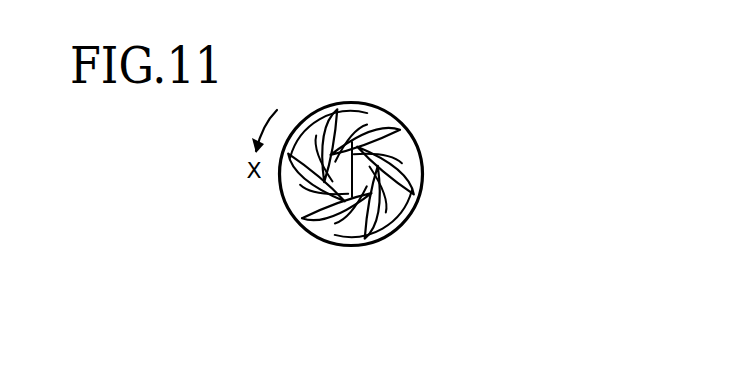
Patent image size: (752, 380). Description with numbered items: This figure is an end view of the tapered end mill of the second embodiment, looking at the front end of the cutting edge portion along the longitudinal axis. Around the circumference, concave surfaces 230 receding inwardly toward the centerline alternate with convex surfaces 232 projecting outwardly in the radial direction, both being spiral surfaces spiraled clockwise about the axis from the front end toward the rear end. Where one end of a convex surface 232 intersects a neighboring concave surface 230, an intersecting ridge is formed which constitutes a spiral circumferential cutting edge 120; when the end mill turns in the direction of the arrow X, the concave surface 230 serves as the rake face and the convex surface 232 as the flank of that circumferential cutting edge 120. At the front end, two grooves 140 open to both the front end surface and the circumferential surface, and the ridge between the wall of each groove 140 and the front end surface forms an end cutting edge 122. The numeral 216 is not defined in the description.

The circumferential cutting edge 120 is at (368, 115).
The end cutting edge 122 is at (346, 103).
The groove 140 is at (303, 127).
The groove 216 is at (412, 143).
The concave surface 230 is at (423, 166).
The convex surface 232 is at (393, 140).